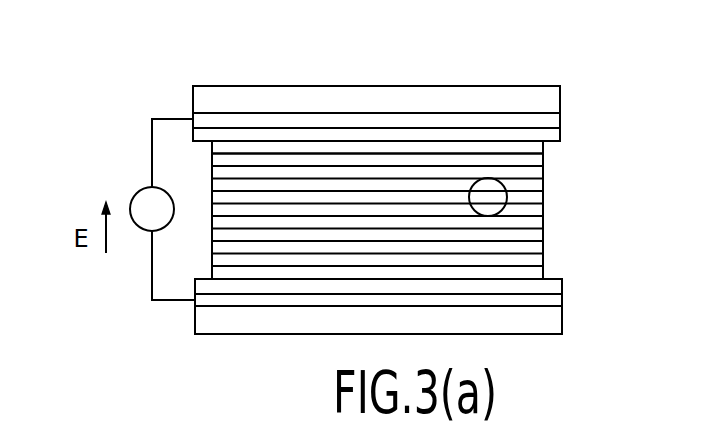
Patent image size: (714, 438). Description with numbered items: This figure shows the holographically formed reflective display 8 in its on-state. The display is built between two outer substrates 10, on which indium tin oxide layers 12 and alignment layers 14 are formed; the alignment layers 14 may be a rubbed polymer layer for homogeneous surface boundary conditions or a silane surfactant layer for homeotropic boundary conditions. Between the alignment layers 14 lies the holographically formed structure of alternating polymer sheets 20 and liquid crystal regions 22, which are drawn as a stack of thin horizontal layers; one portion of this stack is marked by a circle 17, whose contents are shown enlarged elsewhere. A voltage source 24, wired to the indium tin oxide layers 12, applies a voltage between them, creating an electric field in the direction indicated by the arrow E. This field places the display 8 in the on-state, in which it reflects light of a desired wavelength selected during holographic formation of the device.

The holographically formed reflective display 8 is at (377, 167).
The substrate 10 is at (203, 97).
The indium tin oxide layer 12 is at (200, 117).
The alignment layer 14 is at (555, 133).
The circle 17 is at (508, 198).
The polymer sheet 20 is at (532, 240).
The liquid crystal region 22 is at (537, 147).
The voltage source 24 is at (140, 190).